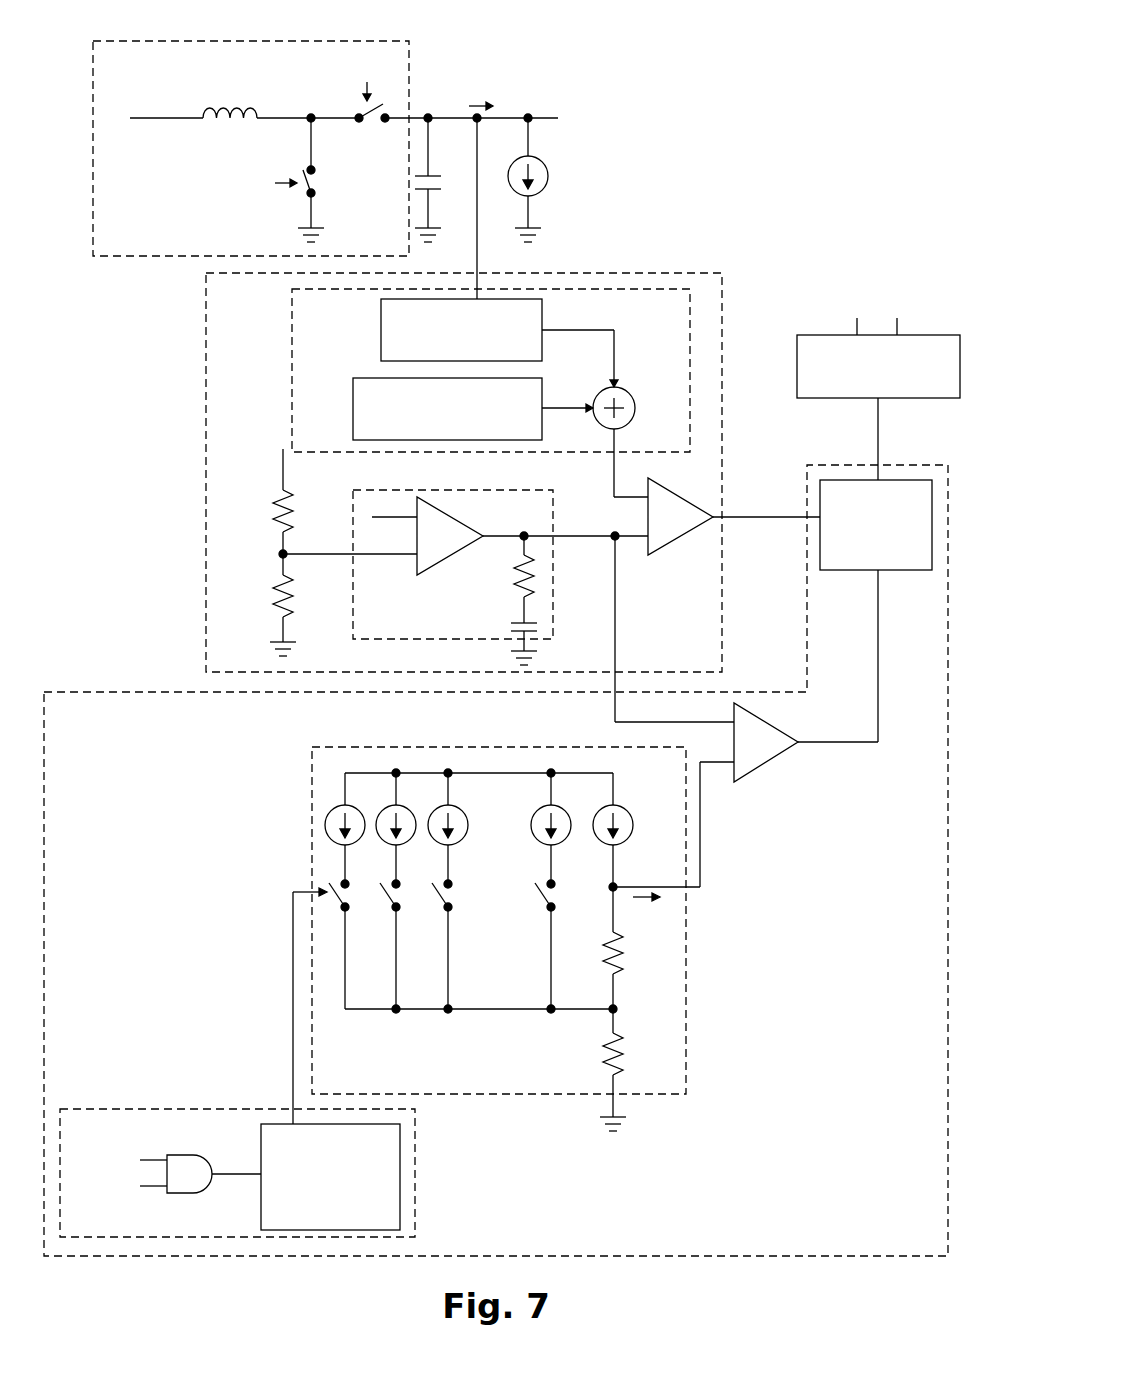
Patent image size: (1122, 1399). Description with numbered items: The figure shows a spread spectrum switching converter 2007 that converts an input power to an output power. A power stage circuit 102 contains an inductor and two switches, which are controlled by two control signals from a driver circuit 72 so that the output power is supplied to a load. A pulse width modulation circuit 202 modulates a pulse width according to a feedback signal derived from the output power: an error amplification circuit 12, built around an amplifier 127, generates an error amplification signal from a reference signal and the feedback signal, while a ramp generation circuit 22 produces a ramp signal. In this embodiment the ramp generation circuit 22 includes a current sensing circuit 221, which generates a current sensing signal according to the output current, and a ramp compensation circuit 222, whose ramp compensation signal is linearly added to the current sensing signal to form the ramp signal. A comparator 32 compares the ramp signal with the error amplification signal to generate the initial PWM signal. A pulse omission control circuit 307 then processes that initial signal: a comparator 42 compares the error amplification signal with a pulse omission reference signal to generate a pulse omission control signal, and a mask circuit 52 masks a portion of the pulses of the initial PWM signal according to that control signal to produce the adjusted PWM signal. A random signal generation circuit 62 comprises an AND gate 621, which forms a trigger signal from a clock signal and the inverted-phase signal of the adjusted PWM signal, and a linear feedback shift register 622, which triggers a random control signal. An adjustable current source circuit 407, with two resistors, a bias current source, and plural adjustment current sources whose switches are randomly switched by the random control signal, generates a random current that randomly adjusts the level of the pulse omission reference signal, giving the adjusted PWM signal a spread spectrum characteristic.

The spread spectrum switching converter 2007 is at (862, 42).
The power stage circuit 102 is at (360, 38).
The pulse width modulation circuit 202 is at (670, 267).
The ramp generation circuit 22 is at (491, 370).
The current sensing circuit 221 is at (461, 330).
The ramp compensation circuit 222 is at (447, 409).
The error amplification circuit 12 is at (453, 577).
The amplifier 127 is at (457, 512).
The comparator 32 is at (668, 484).
The driver circuit 72 is at (878, 348).
The mask circuit 52 is at (876, 525).
The comparator 42 is at (772, 723).
The pulse omission control circuit 307 is at (496, 860).
The adjustable current source circuit 407 is at (327, 747).
The random signal generation circuit 62 is at (78, 1107).
The AND gate 621 is at (182, 1152).
The linear feedback shift register 622 is at (330, 1177).